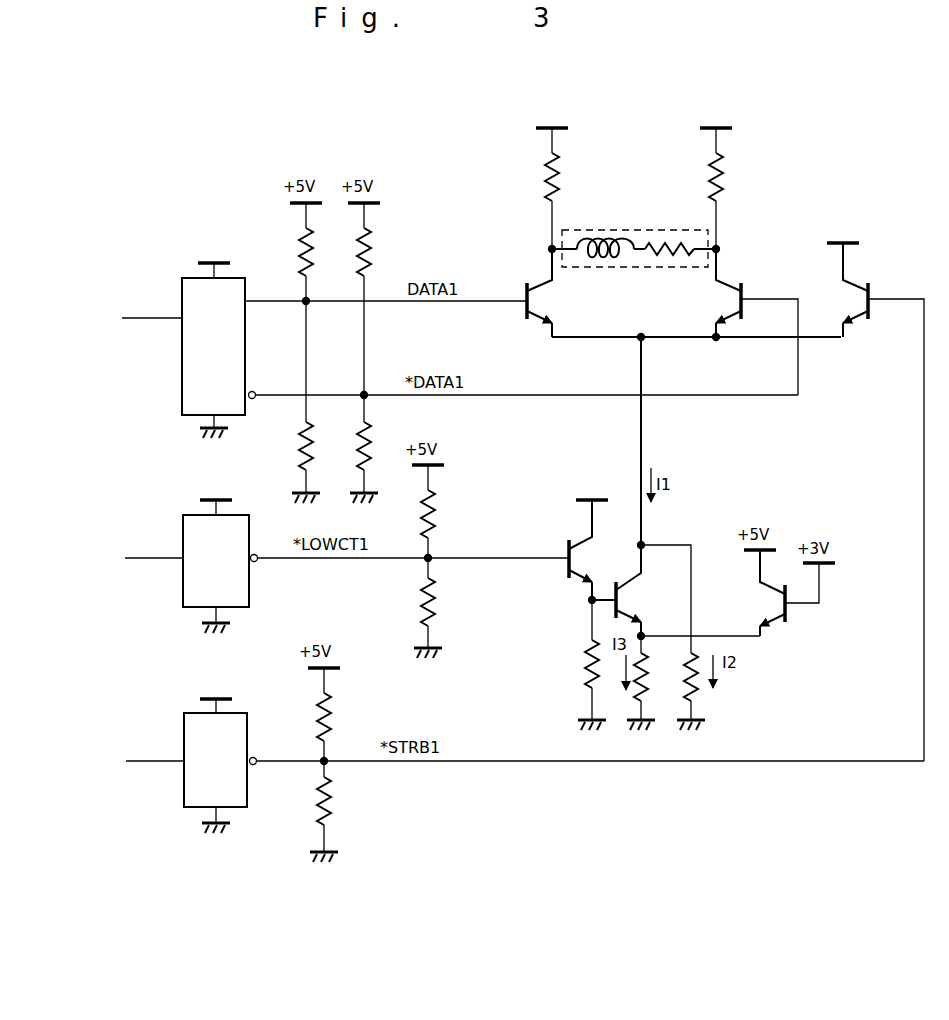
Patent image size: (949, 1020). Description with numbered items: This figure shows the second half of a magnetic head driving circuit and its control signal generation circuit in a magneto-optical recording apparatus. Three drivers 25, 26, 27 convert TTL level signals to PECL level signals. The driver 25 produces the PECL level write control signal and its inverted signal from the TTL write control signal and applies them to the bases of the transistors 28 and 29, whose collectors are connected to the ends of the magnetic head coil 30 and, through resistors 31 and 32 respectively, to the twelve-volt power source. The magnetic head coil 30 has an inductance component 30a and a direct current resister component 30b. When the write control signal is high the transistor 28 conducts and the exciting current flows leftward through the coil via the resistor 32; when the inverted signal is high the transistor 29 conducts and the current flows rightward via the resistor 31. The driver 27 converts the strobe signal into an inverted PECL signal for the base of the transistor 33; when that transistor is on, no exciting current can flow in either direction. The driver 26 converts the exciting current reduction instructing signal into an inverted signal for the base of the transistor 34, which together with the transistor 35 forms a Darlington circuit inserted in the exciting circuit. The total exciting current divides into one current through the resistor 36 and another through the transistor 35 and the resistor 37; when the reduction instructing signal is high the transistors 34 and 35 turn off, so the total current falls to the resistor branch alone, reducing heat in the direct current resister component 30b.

The driver 25 is at (182, 290).
The driver 26 is at (183, 528).
The driver 27 is at (184, 730).
The transistor 28 is at (525, 291).
The transistor 29 is at (749, 296).
The magnetic head coil 30 is at (651, 230).
The inductance component 30a is at (605, 246).
The direct current resister component 30b is at (684, 246).
The resistor 31 is at (548, 183).
The resistor 32 is at (722, 193).
The transistor 33 is at (876, 291).
The transistor 34 is at (566, 549).
The transistor 35 is at (627, 597).
The resistor 36 is at (696, 653).
The resistor 37 is at (649, 653).